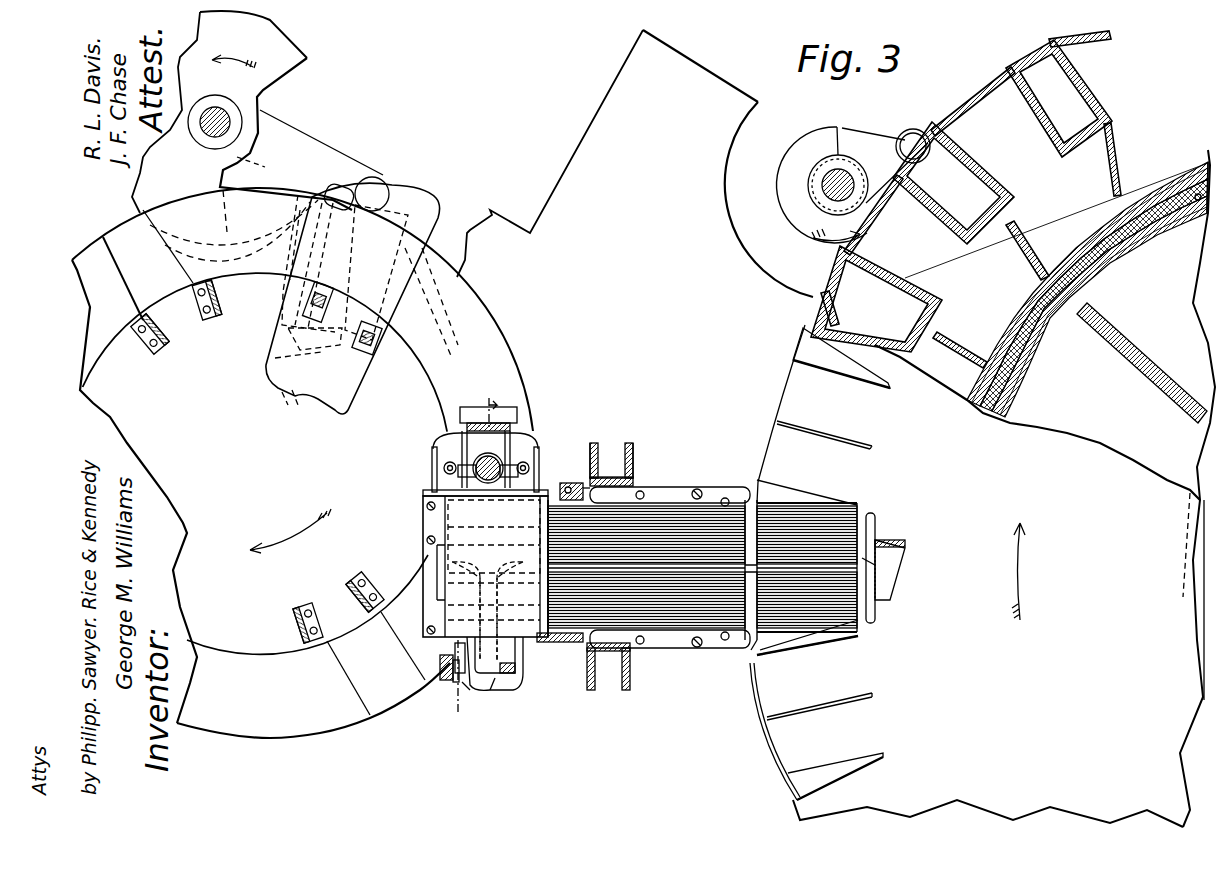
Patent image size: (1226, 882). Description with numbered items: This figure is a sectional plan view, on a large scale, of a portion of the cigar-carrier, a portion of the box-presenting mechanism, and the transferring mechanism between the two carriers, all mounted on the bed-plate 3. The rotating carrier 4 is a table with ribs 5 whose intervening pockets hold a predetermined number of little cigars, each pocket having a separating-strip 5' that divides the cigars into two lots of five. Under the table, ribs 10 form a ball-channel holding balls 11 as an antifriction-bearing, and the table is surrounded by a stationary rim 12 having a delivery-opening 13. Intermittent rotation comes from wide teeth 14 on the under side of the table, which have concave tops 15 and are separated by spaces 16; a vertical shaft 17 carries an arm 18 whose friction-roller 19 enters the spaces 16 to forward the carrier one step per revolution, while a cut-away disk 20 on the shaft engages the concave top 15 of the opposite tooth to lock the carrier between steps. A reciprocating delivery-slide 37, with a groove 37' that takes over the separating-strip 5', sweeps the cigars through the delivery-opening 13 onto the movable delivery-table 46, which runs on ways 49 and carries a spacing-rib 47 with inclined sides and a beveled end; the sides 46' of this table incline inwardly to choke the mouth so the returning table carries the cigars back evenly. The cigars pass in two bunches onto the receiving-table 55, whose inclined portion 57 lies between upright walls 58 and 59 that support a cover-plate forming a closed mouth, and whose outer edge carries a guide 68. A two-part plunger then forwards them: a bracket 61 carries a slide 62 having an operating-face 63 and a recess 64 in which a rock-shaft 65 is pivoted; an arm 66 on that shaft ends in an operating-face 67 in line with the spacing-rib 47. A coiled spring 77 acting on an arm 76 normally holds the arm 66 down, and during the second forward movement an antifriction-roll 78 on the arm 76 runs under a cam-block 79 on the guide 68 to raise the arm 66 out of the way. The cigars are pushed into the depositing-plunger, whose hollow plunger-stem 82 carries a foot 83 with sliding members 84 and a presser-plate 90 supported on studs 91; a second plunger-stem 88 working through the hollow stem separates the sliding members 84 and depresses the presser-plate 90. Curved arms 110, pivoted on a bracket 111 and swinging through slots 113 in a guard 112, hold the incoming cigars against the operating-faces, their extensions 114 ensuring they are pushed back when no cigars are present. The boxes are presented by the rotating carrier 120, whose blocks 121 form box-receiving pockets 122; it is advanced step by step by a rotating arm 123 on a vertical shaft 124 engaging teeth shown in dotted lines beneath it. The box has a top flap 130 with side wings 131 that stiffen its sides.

The bed-plate 3 is at (828, 266).
The rotating carrier 4 is at (1150, 322).
The ribs 5 is at (823, 564).
The separating-strip 5' is at (835, 570).
The ribs 10 is at (1087, 258).
The balls 11 is at (1208, 163).
The stationary rim 12 is at (757, 708).
The delivery-opening 13 is at (757, 648).
The wide teeth 14 is at (1049, 43).
The concave tops 15 is at (985, 110).
The spaces 16 is at (961, 196).
The vertical shaft 17 is at (822, 183).
The arm 18 is at (885, 165).
The friction-roller 19 is at (915, 130).
The cut-away disk 20 is at (792, 205).
The delivery-slide 37 is at (884, 568).
The groove 37' is at (904, 570).
The delivery-table 46 is at (702, 566).
The sides 46' is at (610, 566).
The spacing-rib 47 is at (658, 575).
The ways 49 is at (648, 487).
The receiving-table 55 is at (485, 566).
The inclined portion 57 is at (563, 488).
The upright wall 58 is at (573, 647).
The upright wall 59 is at (575, 473).
The bracket 61 is at (515, 650).
The slide 62 is at (515, 668).
The operating-face 63 is at (508, 635).
The recess 64 is at (455, 650).
The rock-shaft 65 is at (515, 682).
The arm 66 is at (487, 619).
The operating-face 67 is at (492, 570).
The guide 68 is at (423, 526).
The arm 76 is at (451, 680).
The coiled spring 77 is at (465, 685).
The antifriction-roll 78 is at (440, 663).
The cam-block 79 is at (437, 582).
The plunger-stem 82 is at (480, 480).
The foot 83 is at (423, 493).
The sliding members 84 is at (432, 455).
The plunger-stem 88 is at (492, 476).
The presser-plate 90 is at (529, 566).
The studs 91 is at (444, 468).
The curved arms 110 is at (517, 410).
The bracket 111 is at (486, 457).
The guard 112 is at (510, 427).
The slots 113 is at (485, 444).
The extensions 114 is at (458, 476).
The rotating carrier 120 is at (302, 463).
The blocks 121 is at (284, 462).
The box-receiving pockets 122 is at (264, 432).
The rotating arm 123 is at (260, 112).
The vertical shaft 124 is at (230, 120).
The top flap 130 is at (380, 283).
The side wings 131 is at (327, 267).